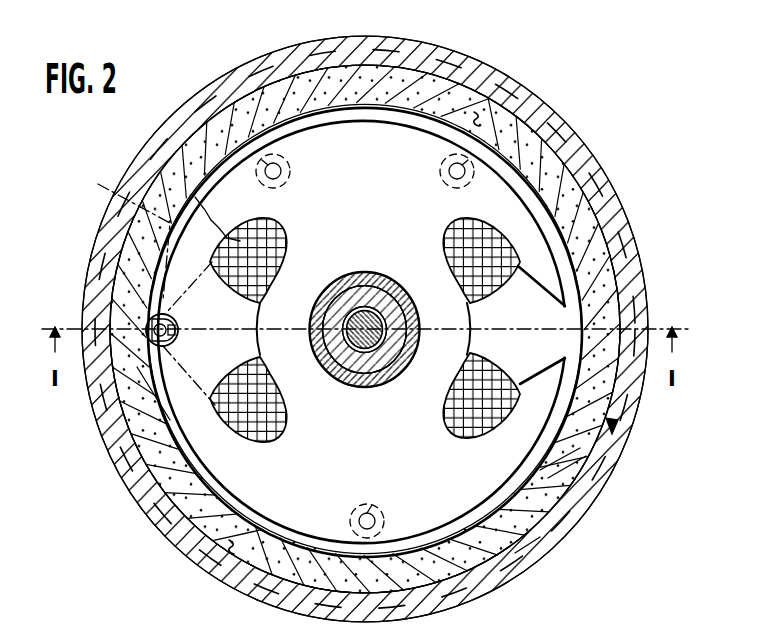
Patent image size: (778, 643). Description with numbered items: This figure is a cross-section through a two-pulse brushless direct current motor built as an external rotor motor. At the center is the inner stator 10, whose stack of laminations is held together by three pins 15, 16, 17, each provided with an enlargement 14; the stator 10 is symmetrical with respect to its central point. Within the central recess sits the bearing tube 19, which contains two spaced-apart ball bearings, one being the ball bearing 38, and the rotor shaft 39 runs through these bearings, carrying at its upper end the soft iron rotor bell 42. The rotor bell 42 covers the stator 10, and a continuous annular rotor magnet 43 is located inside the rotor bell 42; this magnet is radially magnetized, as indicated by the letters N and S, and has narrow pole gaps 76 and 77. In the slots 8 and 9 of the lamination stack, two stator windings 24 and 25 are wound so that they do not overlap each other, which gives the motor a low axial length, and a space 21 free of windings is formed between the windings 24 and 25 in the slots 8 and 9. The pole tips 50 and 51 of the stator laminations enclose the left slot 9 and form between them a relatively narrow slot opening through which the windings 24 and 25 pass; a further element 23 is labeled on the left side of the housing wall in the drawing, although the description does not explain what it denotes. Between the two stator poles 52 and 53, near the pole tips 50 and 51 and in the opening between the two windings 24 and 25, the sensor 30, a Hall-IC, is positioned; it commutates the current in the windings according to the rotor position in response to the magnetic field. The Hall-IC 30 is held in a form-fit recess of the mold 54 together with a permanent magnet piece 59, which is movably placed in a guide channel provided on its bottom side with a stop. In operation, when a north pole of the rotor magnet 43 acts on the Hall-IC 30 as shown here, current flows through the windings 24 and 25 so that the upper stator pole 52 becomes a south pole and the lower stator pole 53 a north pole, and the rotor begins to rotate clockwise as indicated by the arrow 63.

The slot 8 is at (443, 238).
The slot 9 is at (282, 240).
The inner stator 10 is at (363, 245).
The enlargement 14 is at (370, 506).
The pin 15 is at (375, 521).
The pin 16 is at (452, 177).
The pin 17 is at (278, 177).
The bearing tube 19 is at (330, 373).
The space free of windings 21 is at (250, 327).
The housing wall 23 is at (173, 420).
The stator winding 24 is at (490, 263).
The stator winding 25 is at (493, 405).
The sensor 30 is at (147, 320).
The ball bearing 38 is at (380, 367).
The rotor shaft 39 is at (375, 325).
The rotor bell 42 is at (598, 203).
The rotor magnet 43 is at (597, 287).
The pole tip 50 is at (112, 192).
The pole tip 51 is at (170, 376).
The stator pole 52 is at (388, 118).
The stator pole 53 is at (523, 553).
The mold 54 is at (172, 322).
The permanent magnet piece 59 is at (176, 333).
The arrow 63 is at (620, 408).
The pole gap 76 is at (573, 487).
The pole gap 77 is at (168, 182).